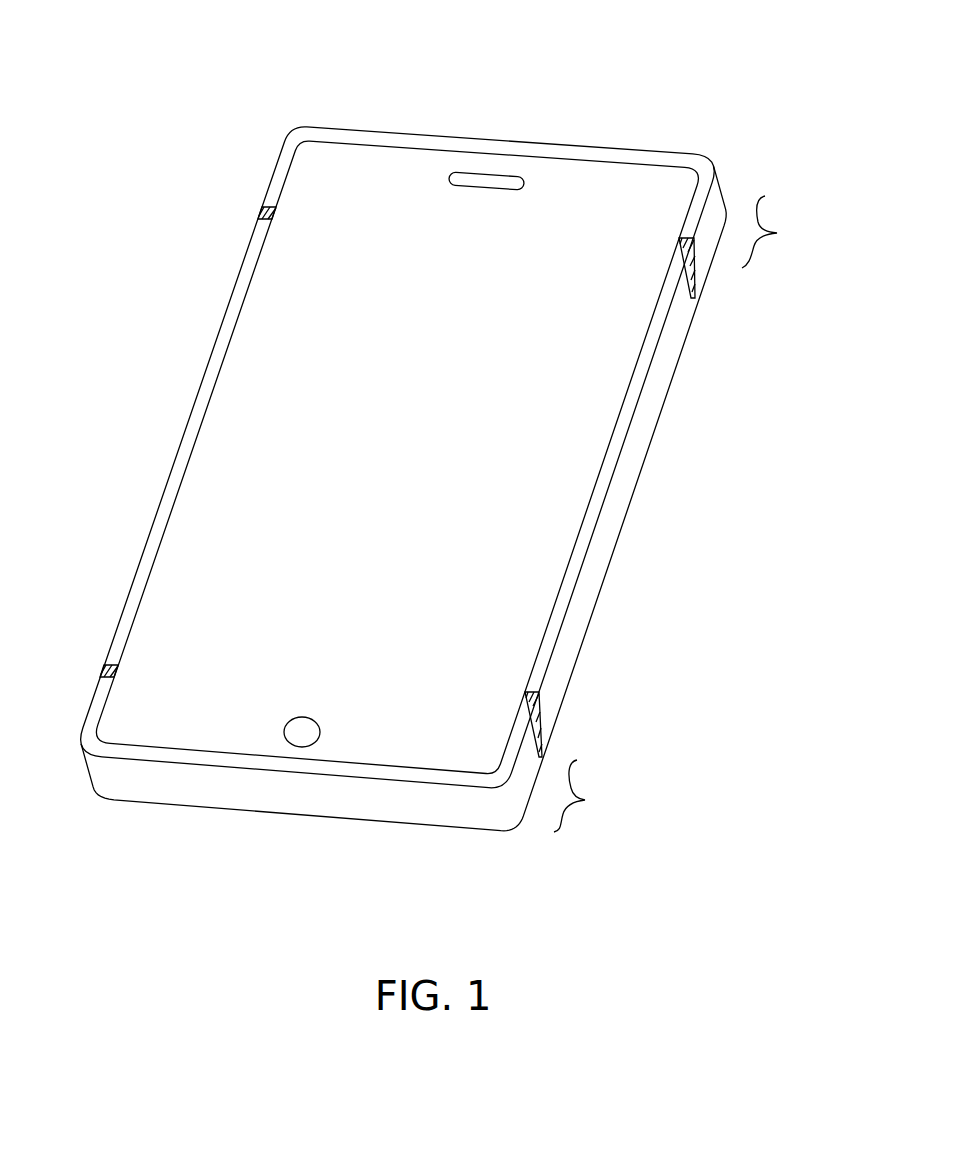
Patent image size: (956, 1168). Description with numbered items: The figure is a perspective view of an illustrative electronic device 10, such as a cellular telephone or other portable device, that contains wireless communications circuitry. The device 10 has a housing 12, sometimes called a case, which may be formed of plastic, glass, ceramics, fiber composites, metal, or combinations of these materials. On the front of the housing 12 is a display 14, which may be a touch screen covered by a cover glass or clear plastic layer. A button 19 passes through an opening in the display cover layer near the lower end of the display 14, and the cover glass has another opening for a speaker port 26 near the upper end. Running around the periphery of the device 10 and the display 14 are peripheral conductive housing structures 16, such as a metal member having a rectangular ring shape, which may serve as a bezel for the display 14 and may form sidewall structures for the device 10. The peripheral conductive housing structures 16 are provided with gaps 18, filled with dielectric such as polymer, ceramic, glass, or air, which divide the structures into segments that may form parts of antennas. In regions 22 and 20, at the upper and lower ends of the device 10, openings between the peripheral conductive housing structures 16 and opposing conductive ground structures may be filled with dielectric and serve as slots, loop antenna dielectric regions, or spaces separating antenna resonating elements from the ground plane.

The electronic device 10 is at (708, 52).
The housing 12 is at (737, 182).
The display 14 is at (374, 170).
The peripheral conductive housing structures 16 is at (637, 448).
The gaps 18 is at (260, 212).
The button 19 is at (302, 748).
The region 20 is at (587, 796).
The region 22 is at (776, 232).
The speaker port 26 is at (485, 177).